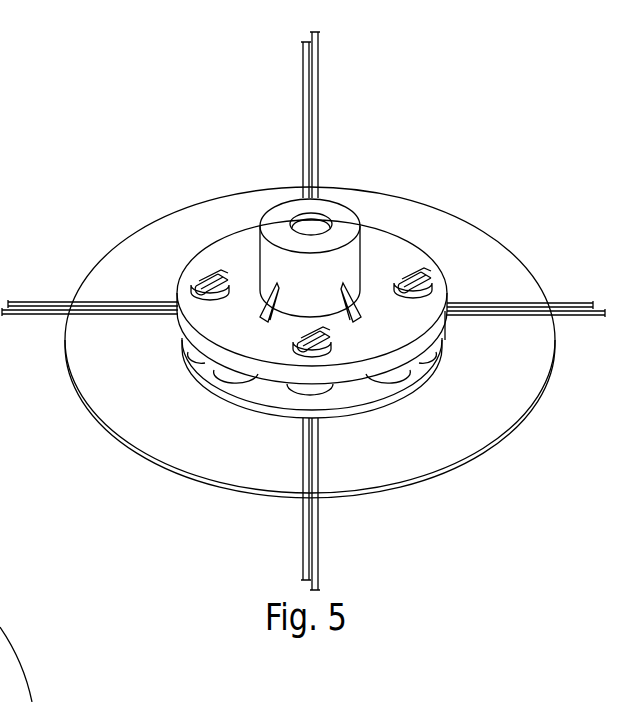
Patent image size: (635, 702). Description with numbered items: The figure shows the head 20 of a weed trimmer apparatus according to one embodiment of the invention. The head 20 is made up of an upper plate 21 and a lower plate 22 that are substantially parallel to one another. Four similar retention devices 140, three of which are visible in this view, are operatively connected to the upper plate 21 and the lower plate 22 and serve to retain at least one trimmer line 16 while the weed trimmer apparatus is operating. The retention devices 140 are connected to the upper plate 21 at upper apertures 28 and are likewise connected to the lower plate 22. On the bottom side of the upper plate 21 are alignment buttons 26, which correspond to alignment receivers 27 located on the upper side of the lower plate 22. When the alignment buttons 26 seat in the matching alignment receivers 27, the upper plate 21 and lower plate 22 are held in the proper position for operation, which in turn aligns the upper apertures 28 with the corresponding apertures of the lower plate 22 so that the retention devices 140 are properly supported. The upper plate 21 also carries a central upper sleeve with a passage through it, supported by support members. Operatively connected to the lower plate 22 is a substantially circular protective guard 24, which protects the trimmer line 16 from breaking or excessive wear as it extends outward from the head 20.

The head 20 is at (303, 311).
The upper plate 21 is at (412, 257).
The lower plate 22 is at (348, 393).
The circular protective guard 24 is at (270, 477).
The alignment buttons 26 is at (270, 397).
The alignment receivers 27 is at (236, 385).
The upper apertures 28 is at (428, 289).
The retention devices 140 is at (423, 285).
The trimmer line 16 is at (601, 316).